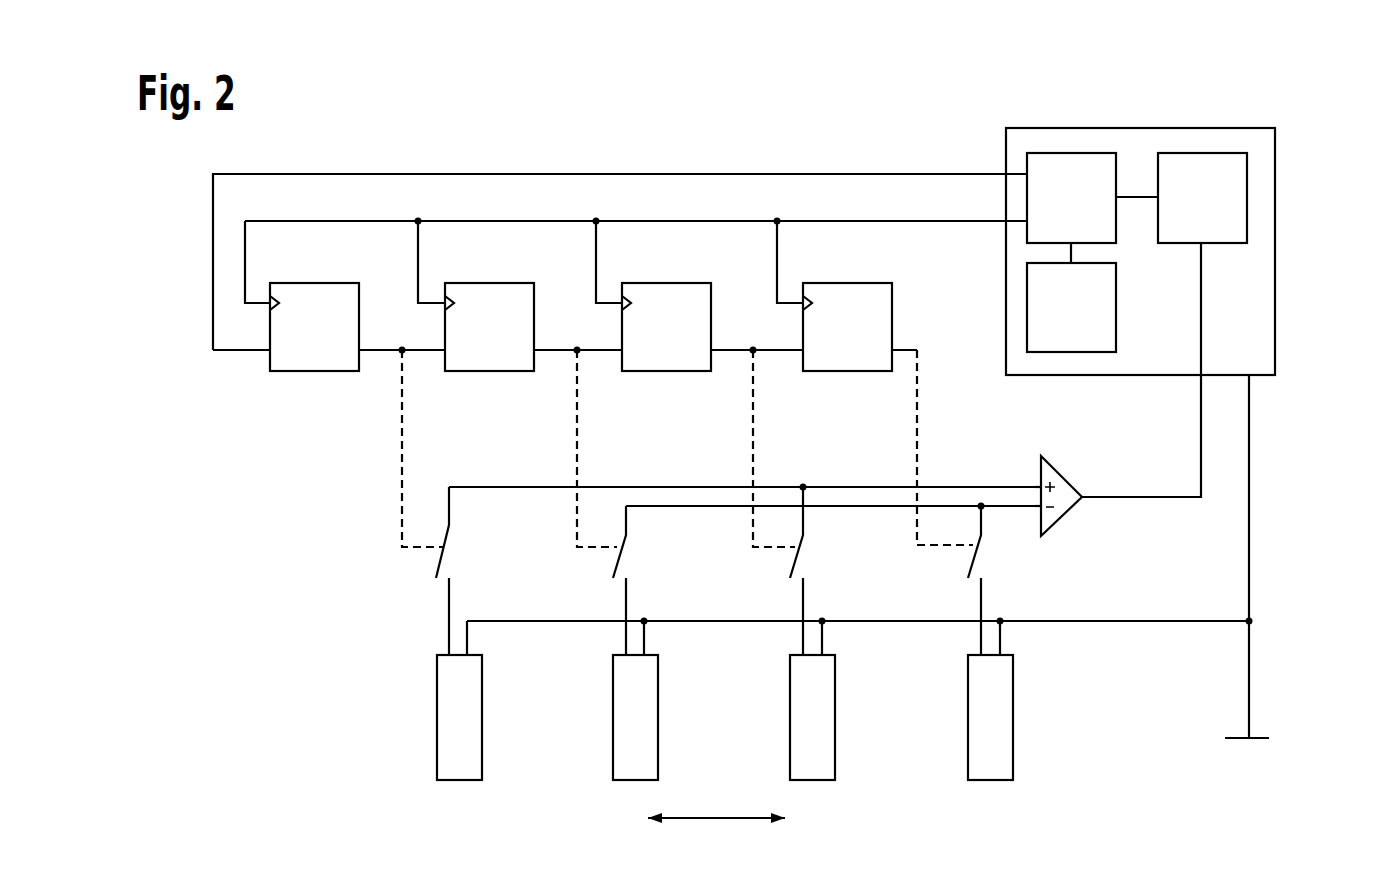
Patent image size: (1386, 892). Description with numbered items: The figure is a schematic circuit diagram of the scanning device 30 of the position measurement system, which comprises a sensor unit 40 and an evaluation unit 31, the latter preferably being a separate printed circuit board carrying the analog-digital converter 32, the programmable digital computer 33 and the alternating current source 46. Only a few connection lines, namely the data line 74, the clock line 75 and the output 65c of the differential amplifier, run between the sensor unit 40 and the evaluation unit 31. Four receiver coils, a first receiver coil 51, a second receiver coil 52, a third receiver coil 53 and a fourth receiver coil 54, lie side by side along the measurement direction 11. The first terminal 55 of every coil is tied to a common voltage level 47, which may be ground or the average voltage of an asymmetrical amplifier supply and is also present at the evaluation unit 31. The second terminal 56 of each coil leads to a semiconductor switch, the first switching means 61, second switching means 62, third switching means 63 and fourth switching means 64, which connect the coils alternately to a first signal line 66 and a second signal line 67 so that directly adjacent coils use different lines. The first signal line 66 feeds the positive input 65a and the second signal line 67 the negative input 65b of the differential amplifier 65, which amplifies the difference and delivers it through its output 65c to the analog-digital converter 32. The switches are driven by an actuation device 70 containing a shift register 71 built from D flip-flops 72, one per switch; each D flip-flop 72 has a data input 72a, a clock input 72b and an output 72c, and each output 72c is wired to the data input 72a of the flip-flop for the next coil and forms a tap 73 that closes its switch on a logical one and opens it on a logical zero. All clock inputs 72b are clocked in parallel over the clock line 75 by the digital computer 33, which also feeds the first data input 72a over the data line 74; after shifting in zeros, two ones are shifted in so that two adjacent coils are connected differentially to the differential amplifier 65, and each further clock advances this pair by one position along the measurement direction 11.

The measurement direction 11 is at (713, 821).
The scanning device 30 is at (293, 790).
The evaluation unit 31 is at (1184, 251).
The analog-digital converter 32 is at (1202, 198).
The programmable digital computer 33 is at (1071, 198).
The sensor unit 40 is at (620, 156).
The alternating current source 46 is at (1071, 307).
The common voltage level 47 is at (1244, 742).
The first receiver coil 51 is at (437, 735).
The second receiver coil 52 is at (613, 735).
The third receiver coil 53 is at (790, 735).
The fourth receiver coil 54 is at (968, 735).
The first terminal of a receiver coil 55 is at (469, 639).
The second terminal of a receiver coil 56 is at (446, 639).
The first switching means 61 is at (438, 565).
The second switching means 62 is at (615, 565).
The third switching means 63 is at (792, 565).
The fourth switching means 64 is at (970, 565).
The differential amplifier 65 is at (1102, 419).
The positive input of the differential amplifier 65a is at (1037, 480).
The negative input of the differential amplifier 65b is at (1037, 515).
The output of the differential amplifier 65c is at (1178, 497).
The first signal line 66 is at (952, 487).
The second signal line 67 is at (849, 506).
The actuation device 70 is at (181, 505).
The shift register 71 is at (222, 464).
The D flip-flop 72 is at (313, 372).
The data input 72a is at (268, 355).
The clock input 72b is at (268, 300).
The output 72c is at (362, 348).
The tap 73 is at (403, 465).
The data line 74 is at (213, 330).
The clock line 75 is at (880, 221).